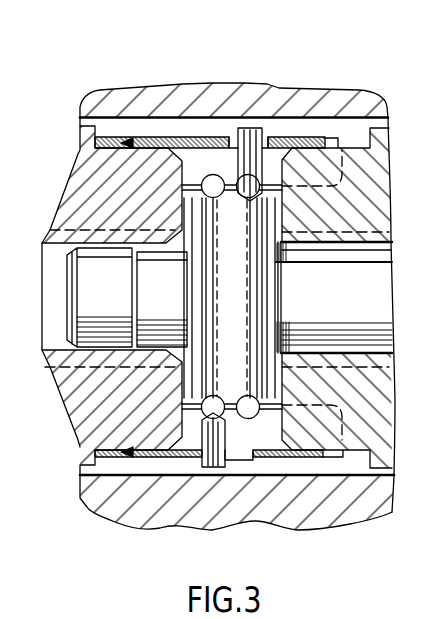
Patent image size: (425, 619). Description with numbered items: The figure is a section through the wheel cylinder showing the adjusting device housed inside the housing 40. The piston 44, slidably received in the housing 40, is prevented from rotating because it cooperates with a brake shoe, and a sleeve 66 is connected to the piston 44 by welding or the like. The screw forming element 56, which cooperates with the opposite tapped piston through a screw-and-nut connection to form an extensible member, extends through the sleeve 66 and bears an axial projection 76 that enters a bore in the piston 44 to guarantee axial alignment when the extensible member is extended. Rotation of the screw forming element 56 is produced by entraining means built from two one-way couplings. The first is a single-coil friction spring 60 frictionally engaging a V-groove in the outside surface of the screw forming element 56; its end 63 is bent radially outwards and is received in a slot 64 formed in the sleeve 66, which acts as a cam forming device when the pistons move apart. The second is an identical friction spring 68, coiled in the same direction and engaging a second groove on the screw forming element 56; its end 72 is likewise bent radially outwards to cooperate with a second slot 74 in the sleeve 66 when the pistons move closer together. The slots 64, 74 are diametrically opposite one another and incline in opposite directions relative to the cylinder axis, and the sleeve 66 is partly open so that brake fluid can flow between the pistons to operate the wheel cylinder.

The housing 40 is at (319, 101).
The piston 44 is at (90, 200).
The screw forming element 56 is at (330, 320).
The friction spring 60 is at (258, 270).
The end of the spring 63 is at (245, 127).
The slot 64 is at (265, 140).
The sleeve 66 is at (172, 157).
The friction spring 68 is at (207, 283).
The end of the spring 72 is at (208, 462).
The second slot 74 is at (248, 454).
The axial projection 76 is at (90, 312).